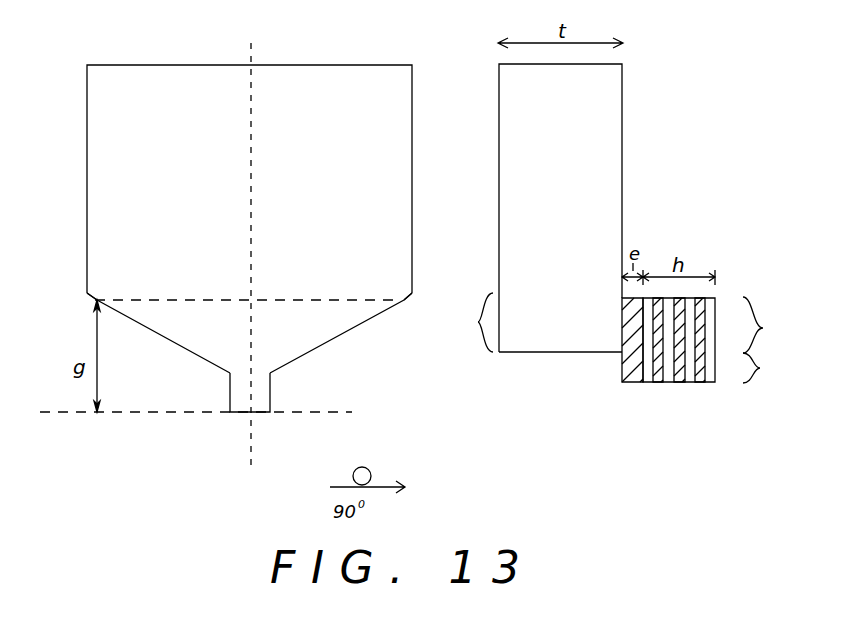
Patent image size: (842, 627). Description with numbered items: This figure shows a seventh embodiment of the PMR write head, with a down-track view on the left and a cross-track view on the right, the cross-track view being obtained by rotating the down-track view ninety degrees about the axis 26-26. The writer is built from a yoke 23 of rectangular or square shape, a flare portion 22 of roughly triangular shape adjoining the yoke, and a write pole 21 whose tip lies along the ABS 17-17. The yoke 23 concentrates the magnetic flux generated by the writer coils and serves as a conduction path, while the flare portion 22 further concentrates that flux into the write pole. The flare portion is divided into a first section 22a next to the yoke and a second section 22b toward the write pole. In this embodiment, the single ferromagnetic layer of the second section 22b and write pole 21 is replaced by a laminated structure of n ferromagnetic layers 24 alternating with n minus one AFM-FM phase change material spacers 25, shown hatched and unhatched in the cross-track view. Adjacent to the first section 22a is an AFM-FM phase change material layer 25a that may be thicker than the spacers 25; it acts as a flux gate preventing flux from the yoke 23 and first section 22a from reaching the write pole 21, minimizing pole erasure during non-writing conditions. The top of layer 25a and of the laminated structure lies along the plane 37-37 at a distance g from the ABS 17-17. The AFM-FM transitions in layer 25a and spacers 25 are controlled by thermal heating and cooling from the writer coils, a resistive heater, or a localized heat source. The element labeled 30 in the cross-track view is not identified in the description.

The ABS 17 is at (201, 412).
The write pole 21 is at (238, 413).
The flare portion 22 is at (312, 334).
The first section 22a is at (465, 322).
The second section 22b is at (774, 325).
The yoke 23 is at (120, 115).
The ferromagnetic layers 24 is at (647, 383).
The AFM-FM phase change material spacers 25 is at (659, 383).
The AFM-FM phase change material layer 25a is at (628, 383).
The axis 26 is at (250, 264).
The substrate plate 30 is at (607, 136).
The plane 37 is at (94, 301).